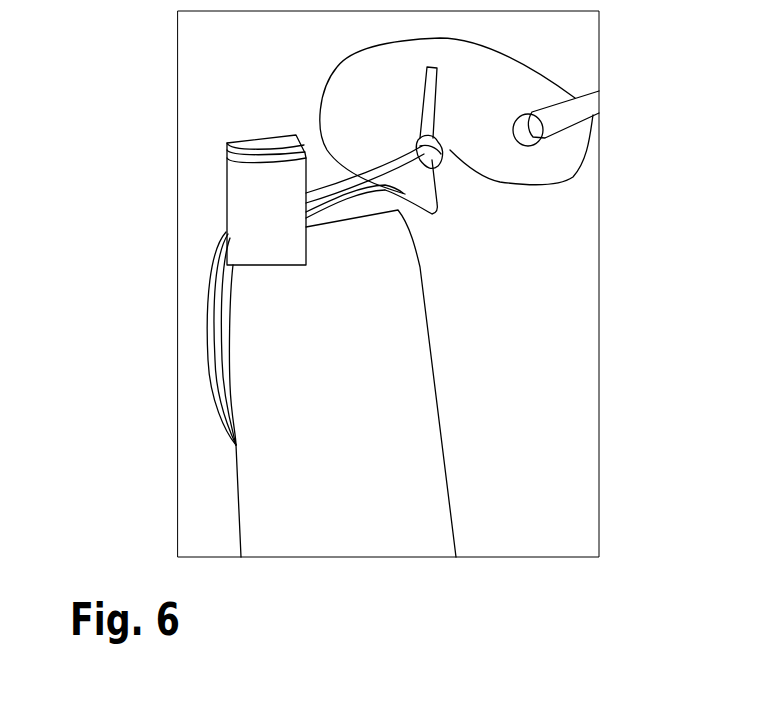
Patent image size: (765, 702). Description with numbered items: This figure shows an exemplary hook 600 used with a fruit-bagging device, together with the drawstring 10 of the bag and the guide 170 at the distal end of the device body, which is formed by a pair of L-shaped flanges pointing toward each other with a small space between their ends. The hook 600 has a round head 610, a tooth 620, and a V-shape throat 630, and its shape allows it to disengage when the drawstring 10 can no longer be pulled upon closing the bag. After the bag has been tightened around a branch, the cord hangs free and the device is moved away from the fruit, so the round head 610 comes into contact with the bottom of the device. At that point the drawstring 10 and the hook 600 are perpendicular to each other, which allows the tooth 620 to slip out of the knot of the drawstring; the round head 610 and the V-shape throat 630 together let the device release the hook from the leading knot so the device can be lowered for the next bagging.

The drawstring 10 is at (210, 278).
The guide 170 is at (224, 175).
The hook 600 is at (542, 184).
The round head 610 is at (318, 93).
The tooth 620 is at (430, 217).
The V-shape throat 630 is at (452, 180).